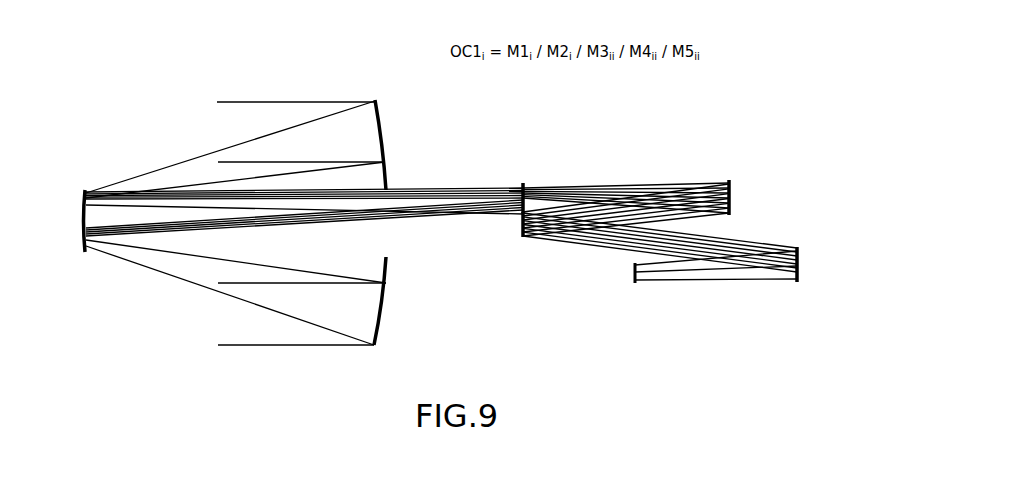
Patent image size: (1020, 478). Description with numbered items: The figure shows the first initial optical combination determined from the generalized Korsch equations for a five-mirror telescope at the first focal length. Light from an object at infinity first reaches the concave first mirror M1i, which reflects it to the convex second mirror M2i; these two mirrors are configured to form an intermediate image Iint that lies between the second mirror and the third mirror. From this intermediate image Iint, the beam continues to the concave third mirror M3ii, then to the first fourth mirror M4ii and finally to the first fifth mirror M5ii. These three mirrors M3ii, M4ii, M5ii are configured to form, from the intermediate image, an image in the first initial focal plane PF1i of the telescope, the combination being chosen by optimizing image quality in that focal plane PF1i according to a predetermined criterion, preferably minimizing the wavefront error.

The first mirror M1i is at (386, 132).
The second mirror M2i is at (84, 213).
The intermediate image Iint is at (522, 183).
The third mirror M3ii is at (732, 196).
The first fourth mirror M4ii is at (522, 232).
The first fifth mirror M5ii is at (801, 258).
The first initial focal plane PF1i is at (630, 272).